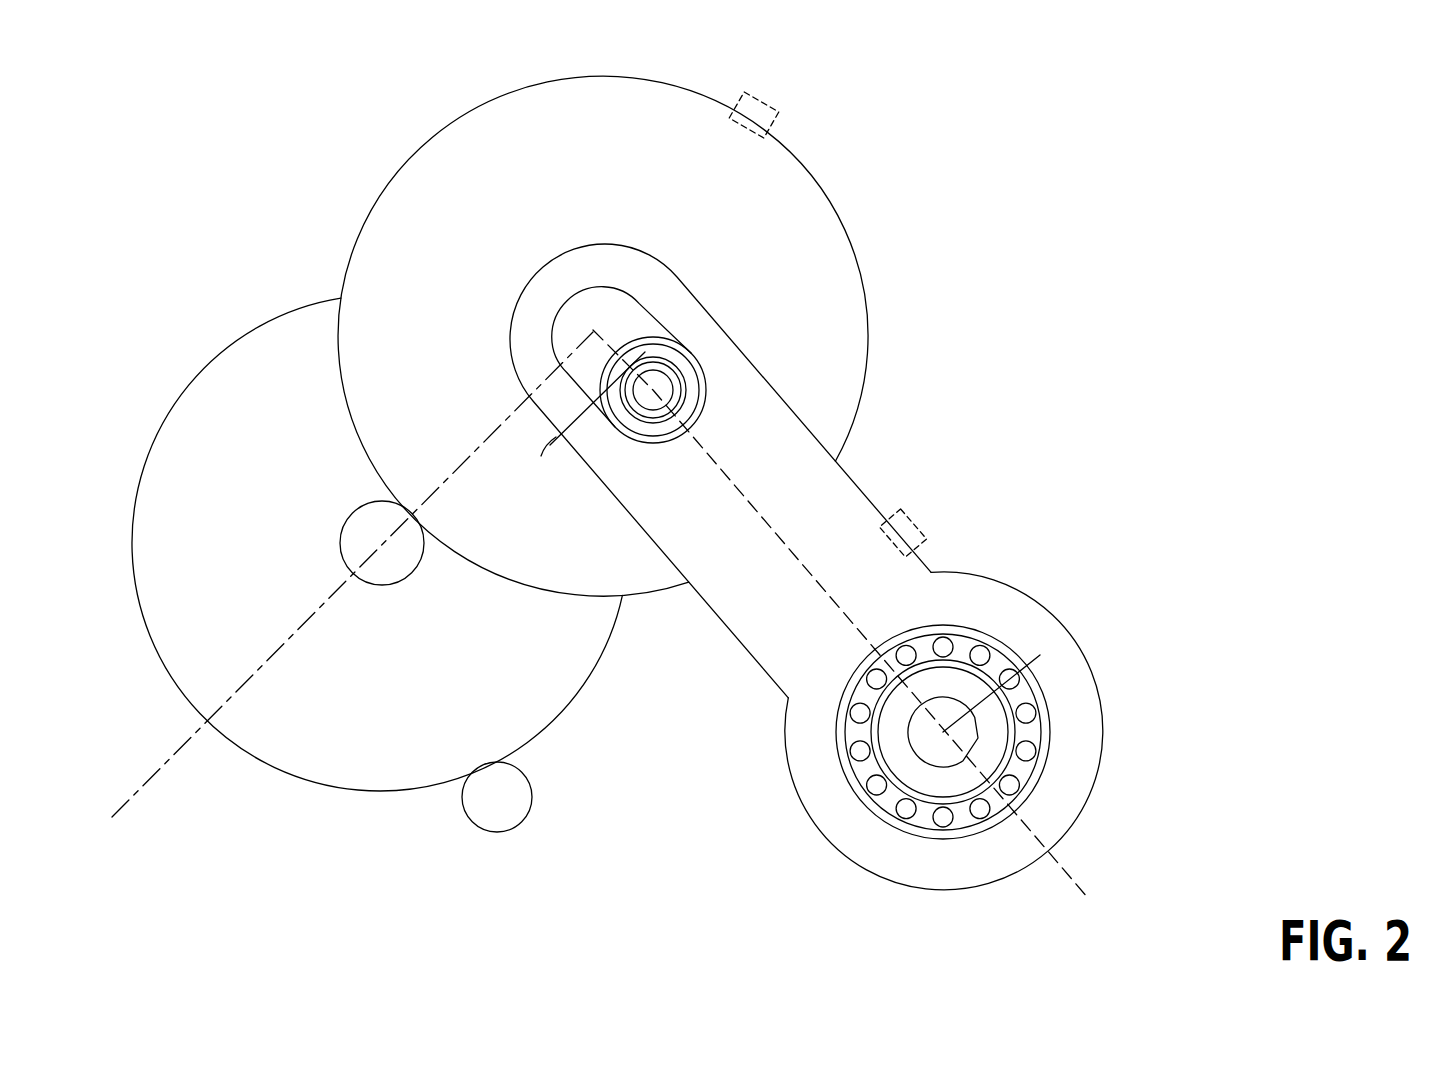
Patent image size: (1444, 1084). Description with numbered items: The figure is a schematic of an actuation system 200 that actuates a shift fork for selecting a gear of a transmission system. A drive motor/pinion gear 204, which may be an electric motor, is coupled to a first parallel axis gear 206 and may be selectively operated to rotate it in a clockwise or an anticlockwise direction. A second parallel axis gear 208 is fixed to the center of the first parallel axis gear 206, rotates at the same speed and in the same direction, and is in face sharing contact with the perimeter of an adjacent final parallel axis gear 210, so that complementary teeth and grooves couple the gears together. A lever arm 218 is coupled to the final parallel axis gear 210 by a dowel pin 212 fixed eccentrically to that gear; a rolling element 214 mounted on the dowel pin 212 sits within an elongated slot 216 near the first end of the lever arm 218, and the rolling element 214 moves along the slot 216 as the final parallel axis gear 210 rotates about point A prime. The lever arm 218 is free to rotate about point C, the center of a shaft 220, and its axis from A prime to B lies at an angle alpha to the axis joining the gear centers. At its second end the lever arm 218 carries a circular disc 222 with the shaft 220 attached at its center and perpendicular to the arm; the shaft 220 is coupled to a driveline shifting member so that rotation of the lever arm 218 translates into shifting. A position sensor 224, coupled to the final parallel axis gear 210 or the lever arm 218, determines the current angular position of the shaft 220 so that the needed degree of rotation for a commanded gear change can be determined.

The actuation system 200 is at (1287, 78).
The drive motor/pinion gear 204 is at (462, 797).
The first parallel axis gear 206 is at (315, 322).
The second parallel axis gear 208 is at (385, 585).
The final parallel axis gear 210 is at (410, 178).
The dowel pin 212 is at (652, 396).
The rolling element 214 is at (665, 382).
The elongated slot 216 is at (558, 320).
The lever arm 218 is at (745, 595).
The shaft 220 is at (941, 745).
The circular disc 222 is at (1086, 720).
The position sensor 224 is at (778, 119).